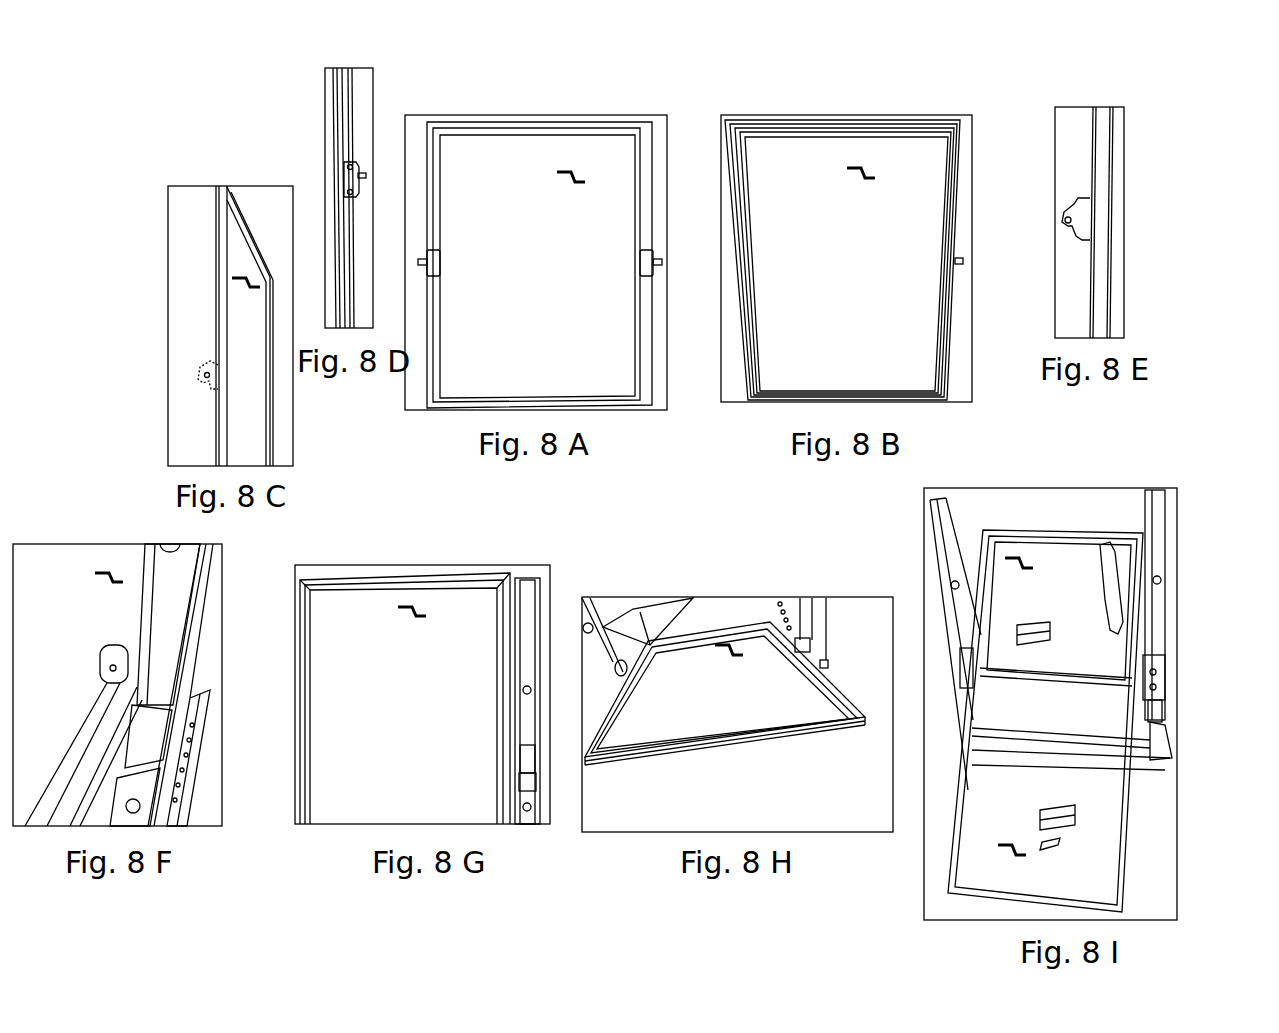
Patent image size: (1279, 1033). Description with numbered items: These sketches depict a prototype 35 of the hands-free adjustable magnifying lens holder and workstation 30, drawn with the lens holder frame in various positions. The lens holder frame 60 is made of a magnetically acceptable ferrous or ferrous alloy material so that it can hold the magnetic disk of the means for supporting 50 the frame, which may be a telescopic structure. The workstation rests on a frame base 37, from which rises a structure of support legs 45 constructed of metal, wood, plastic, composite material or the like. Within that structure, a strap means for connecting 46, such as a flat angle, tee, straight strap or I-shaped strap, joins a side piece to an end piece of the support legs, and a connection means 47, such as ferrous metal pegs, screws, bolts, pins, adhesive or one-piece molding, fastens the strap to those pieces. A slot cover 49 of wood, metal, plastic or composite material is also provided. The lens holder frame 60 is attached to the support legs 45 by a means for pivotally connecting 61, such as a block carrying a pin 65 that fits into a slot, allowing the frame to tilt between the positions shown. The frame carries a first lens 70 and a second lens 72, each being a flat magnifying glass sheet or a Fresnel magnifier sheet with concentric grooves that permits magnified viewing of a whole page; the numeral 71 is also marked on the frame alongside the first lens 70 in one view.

In FIG. 8F, the hands-free adjustable magnifying lens holder and workstation 30 is at (214, 901).
In FIG. 8G, the hands-free adjustable magnifying lens holder and workstation 30 is at (316, 883).
In FIG. 8H, the hands-free adjustable magnifying lens holder and workstation 30 is at (820, 889).
In FIG. 8F, the prototype 35 is at (180, 860).
In FIG. 8G, the prototype 35 is at (350, 848).
In FIG. 8H, the prototype 35 is at (895, 847).
In FIG. 8F, the frame base 37 is at (195, 748).
In FIG. 8H, the frame base 37 is at (665, 608).
In FIG. 8F, the support legs 45 is at (172, 624).
In FIG. 8G, the support legs 45 is at (559, 677).
In FIG. 8H, the support legs 45 is at (818, 608).
In FIG. 8I, the support legs 45 is at (943, 533).
In FIG. 8I, the strap means for connecting 46 is at (1155, 707).
In FIG. 8I, the connection means 47 is at (1152, 722).
In FIG. 8G, the slot cover 49 is at (523, 648).
In FIG. 8I, the slot cover 49 is at (1158, 520).
In FIG. 8I, the means for supporting 50 is at (1115, 570).
In FIG. 8C, the lens holder frame 60 is at (216, 270).
In FIG. 8D, the lens holder frame 60 is at (340, 120).
In FIG. 8A, the lens holder frame 60 is at (468, 394).
In FIG. 8B, the lens holder frame 60 is at (846, 258).
In FIG. 8E, the lens holder frame 60 is at (1108, 138).
In FIG. 8F, the lens holder frame 60 is at (67, 772).
In FIG. 8G, the lens holder frame 60 is at (353, 590).
In FIG. 8H, the lens holder frame 60 is at (648, 745).
In FIG. 8I, the lens holder frame 60 is at (1063, 527).
In FIG. 8C, the means for pivotally connecting 61 is at (148, 363).
In FIG. 8D, the means for pivotally connecting 61 is at (356, 172).
In FIG. 8A, the means for pivotally connecting 61 is at (648, 262).
In FIG. 8E, the means for pivotally connecting 61 is at (1062, 210).
In FIG. 8F, the means for pivotally connecting 61 is at (112, 668).
In FIG. 8G, the means for pivotally connecting 61 is at (518, 782).
In FIG. 8C, the pin 65 is at (148, 363).
In FIG. 8A, the pin 65 is at (661, 267).
In FIG. 8B, the pin 65 is at (963, 262).
In FIG. 8E, the pin 65 is at (1066, 224).
In FIG. 8C, the lens No 1 70 is at (275, 215).
In FIG. 8A, the lens No 1 70 is at (614, 130).
In FIG. 8B, the lens No 1 70 is at (905, 121).
In FIG. 8F, the lens No 1 70 is at (163, 546).
In FIG. 8G, the lens No 1 70 is at (449, 557).
In FIG. 8H, the lens No 1 70 is at (760, 601).
In FIG. 8I, the lens No 1 70 is at (1018, 560).
In FIG. 8C, the window panel 71 is at (248, 279).
In FIG. 8A, the lens No 2 72 is at (573, 172).
In FIG. 8B, the lens No 2 72 is at (865, 162).
In FIG. 8F, the lens No 2 72 is at (115, 573).
In FIG. 8G, the lens No 2 72 is at (415, 607).
In FIG. 8H, the lens No 2 72 is at (733, 645).
In FIG. 8I, the lens No 2 72 is at (1015, 857).